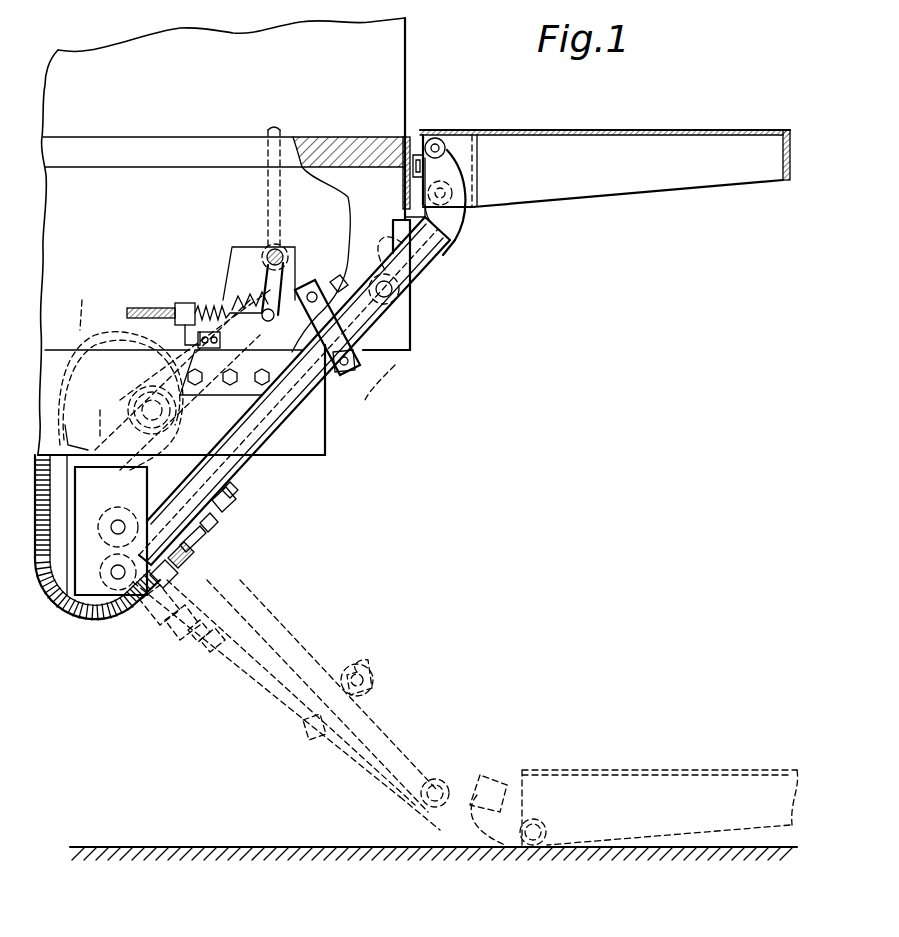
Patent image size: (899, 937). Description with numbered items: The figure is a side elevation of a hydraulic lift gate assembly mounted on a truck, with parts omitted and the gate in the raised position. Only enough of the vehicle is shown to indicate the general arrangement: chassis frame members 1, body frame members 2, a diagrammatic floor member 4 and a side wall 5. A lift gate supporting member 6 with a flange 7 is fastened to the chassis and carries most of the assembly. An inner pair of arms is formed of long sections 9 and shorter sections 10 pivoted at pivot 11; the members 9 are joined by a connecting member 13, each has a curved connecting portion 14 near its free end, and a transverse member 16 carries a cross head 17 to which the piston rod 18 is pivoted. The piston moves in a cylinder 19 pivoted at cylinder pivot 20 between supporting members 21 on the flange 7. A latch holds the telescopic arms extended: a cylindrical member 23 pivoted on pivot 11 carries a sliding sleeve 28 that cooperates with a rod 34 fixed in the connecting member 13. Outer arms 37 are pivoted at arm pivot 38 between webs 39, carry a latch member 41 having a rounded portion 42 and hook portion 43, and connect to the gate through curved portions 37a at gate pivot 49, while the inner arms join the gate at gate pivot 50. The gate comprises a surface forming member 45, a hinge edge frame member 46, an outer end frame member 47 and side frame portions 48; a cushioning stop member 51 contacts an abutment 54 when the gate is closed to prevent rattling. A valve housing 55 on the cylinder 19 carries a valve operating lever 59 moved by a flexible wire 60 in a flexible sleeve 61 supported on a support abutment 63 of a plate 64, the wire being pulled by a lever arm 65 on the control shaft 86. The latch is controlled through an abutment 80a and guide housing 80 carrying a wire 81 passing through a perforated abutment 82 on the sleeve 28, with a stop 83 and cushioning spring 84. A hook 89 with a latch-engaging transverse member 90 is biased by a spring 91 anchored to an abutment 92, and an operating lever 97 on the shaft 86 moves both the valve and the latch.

The chassis frame member 1 is at (330, 435).
The body frame member 2 is at (43, 248).
The floor member 4 is at (323, 137).
The side wall 5 is at (385, 42).
The lift gate supporting member 6 is at (45, 600).
The flange 7 is at (107, 525).
The inner arm long section 9 is at (266, 463).
The inner arm short section 10 is at (200, 542).
The pivot 11 is at (112, 567).
The connecting member 13 is at (285, 482).
The curved connecting portion 14 is at (403, 212).
The transverse member 16 is at (472, 845).
The cross head 17 is at (403, 305).
The piston rod 18 is at (405, 332).
The cylinder 19 is at (400, 362).
The cylinder pivot 20 is at (148, 385).
The supporting member 21 is at (80, 446).
The cylindrical member 23 is at (137, 605).
The sleeve 28 is at (178, 668).
The rod 34 is at (295, 399).
The outer arm 37 is at (318, 380).
The curved portion 37a is at (452, 180).
The arm pivot 38 is at (112, 522).
The web 39 is at (95, 595).
The latch member 41 is at (262, 284).
The rounded portion 42 is at (350, 372).
The hook portion 43 is at (383, 690).
The surface forming member 45 is at (634, 131).
The hinge edge frame member 46 is at (471, 133).
The outer end frame member 47 is at (782, 163).
The side frame portion 48 is at (630, 182).
The gate pivot 49 is at (440, 140).
The gate pivot 50 is at (460, 220).
The cushioning stop member 51 is at (413, 150).
The abutment 54 is at (395, 228).
The valve housing 55 is at (88, 373).
The valve operating lever 59 is at (72, 395).
The flexible wire 60 is at (220, 266).
The flexible sleeve 61 is at (162, 303).
The support abutment 63 is at (185, 300).
The plate 64 is at (236, 250).
The lever arm 65 is at (267, 322).
The guide housing 80 is at (72, 592).
The abutment 80a is at (170, 572).
The wire 81 is at (186, 553).
The perforated abutment 82 is at (212, 528).
The stop 83 is at (236, 492).
The spring 84 is at (222, 510).
The control shaft 86 is at (290, 258).
The hook 89 is at (305, 282).
The latch-engaging transverse member 90 is at (336, 285).
The spring 91 is at (174, 363).
The abutment 92 is at (198, 338).
The operating lever 97 is at (275, 127).